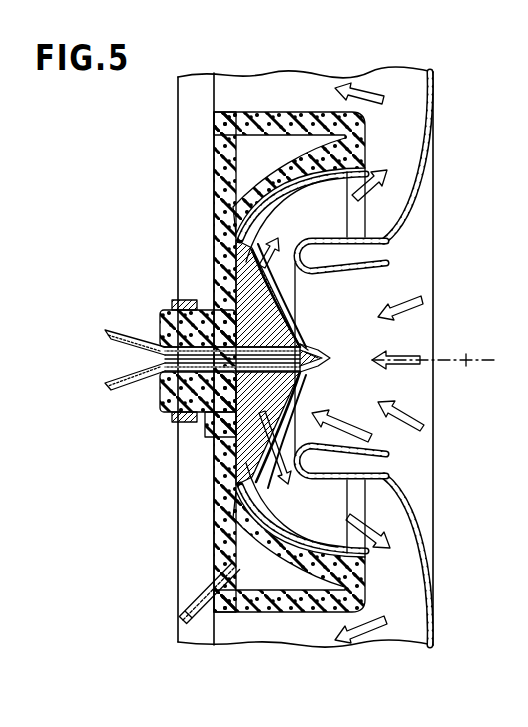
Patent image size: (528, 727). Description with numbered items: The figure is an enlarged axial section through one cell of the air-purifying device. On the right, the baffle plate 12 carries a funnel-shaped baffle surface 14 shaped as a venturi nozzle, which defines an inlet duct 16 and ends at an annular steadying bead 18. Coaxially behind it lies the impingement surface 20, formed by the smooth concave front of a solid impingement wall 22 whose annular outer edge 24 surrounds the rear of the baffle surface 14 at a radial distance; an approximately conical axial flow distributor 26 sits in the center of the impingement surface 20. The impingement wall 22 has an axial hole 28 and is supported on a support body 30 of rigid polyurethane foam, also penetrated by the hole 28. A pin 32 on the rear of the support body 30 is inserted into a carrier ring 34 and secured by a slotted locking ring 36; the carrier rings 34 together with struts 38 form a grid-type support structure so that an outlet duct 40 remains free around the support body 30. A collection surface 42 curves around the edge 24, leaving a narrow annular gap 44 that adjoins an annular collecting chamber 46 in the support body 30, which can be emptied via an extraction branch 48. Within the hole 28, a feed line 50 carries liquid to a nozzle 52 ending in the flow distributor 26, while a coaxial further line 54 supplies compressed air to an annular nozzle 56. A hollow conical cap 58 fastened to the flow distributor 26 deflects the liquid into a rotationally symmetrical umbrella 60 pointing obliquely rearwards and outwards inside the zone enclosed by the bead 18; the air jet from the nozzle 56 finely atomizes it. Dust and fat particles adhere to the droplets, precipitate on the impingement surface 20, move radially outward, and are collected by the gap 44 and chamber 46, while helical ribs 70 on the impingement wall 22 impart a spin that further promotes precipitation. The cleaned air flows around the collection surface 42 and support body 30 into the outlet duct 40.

The baffle plate 12 is at (446, 96).
The baffle surface 14 is at (412, 208).
The inlet duct 16 is at (429, 281).
The steadying bead 18 is at (350, 268).
The impingement surface 20 is at (214, 234).
The impingement wall 22 is at (233, 213).
The annular outer edge 24 is at (340, 198).
The axial flow distributor 26 is at (287, 413).
The axial hole 28 is at (187, 304).
The support body 30 is at (233, 263).
The pin 32 is at (168, 325).
The carrier ring 34 is at (184, 424).
The locking ring 36 is at (173, 417).
The strut 38 is at (185, 97).
The outlet duct 40 is at (289, 107).
The collection surface 42 is at (357, 488).
The annular gap 44 is at (357, 548).
The collecting chamber 46 is at (266, 165).
The extraction branch 48 is at (178, 611).
The feed line 50 is at (108, 366).
The nozzle 52 is at (322, 367).
The further line 54 is at (122, 331).
The annular nozzle 56 is at (301, 345).
The hollow conical cap 58 is at (314, 348).
The umbrella of liquid 60 is at (280, 444).
The helical rib 70 is at (277, 204).